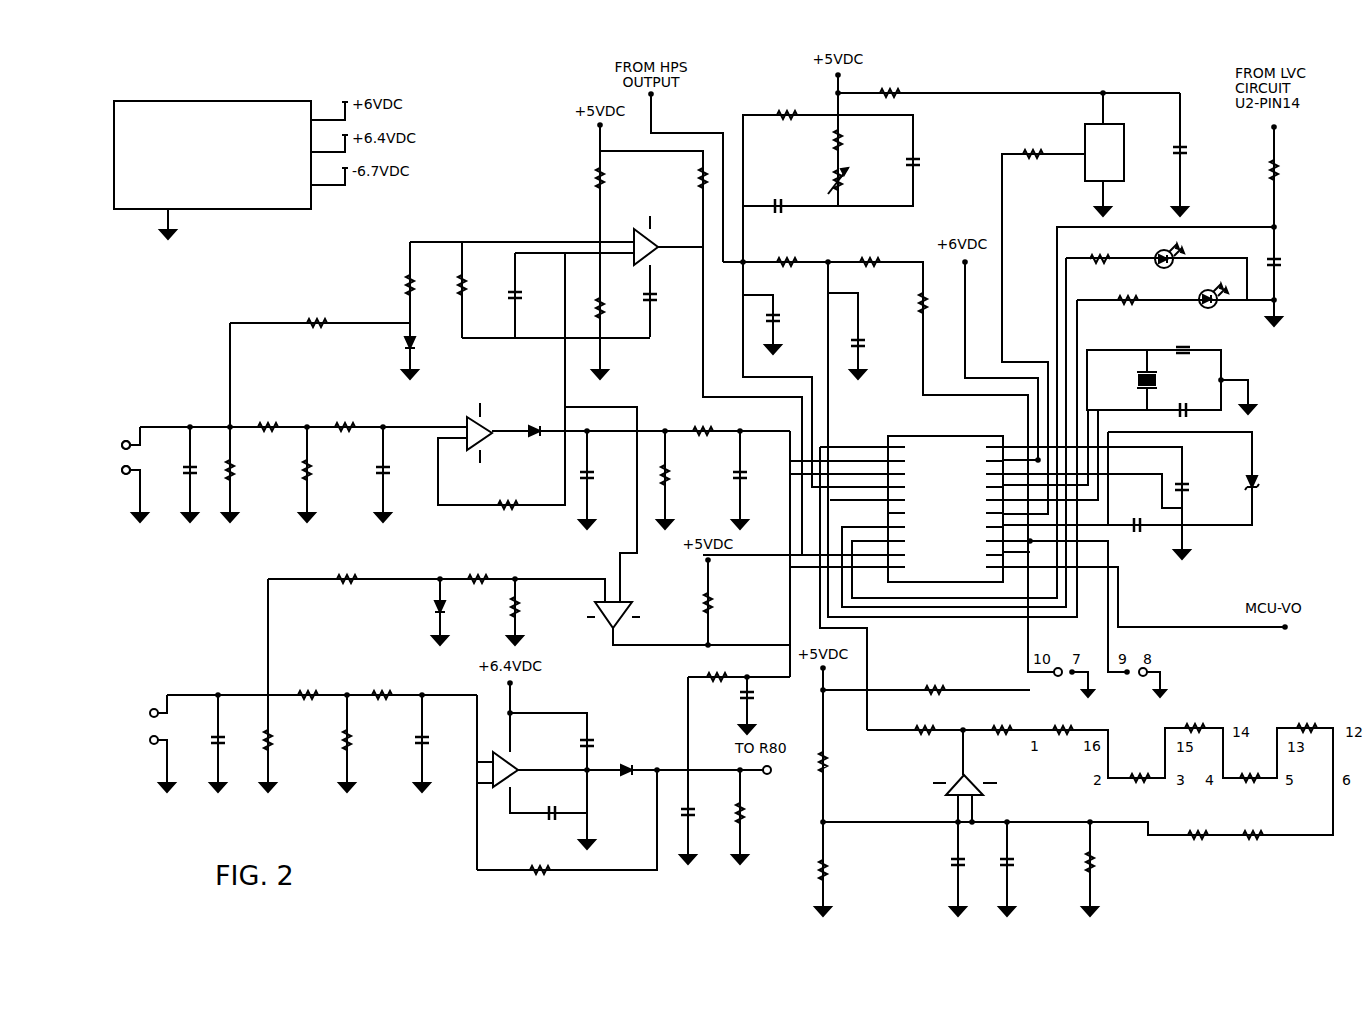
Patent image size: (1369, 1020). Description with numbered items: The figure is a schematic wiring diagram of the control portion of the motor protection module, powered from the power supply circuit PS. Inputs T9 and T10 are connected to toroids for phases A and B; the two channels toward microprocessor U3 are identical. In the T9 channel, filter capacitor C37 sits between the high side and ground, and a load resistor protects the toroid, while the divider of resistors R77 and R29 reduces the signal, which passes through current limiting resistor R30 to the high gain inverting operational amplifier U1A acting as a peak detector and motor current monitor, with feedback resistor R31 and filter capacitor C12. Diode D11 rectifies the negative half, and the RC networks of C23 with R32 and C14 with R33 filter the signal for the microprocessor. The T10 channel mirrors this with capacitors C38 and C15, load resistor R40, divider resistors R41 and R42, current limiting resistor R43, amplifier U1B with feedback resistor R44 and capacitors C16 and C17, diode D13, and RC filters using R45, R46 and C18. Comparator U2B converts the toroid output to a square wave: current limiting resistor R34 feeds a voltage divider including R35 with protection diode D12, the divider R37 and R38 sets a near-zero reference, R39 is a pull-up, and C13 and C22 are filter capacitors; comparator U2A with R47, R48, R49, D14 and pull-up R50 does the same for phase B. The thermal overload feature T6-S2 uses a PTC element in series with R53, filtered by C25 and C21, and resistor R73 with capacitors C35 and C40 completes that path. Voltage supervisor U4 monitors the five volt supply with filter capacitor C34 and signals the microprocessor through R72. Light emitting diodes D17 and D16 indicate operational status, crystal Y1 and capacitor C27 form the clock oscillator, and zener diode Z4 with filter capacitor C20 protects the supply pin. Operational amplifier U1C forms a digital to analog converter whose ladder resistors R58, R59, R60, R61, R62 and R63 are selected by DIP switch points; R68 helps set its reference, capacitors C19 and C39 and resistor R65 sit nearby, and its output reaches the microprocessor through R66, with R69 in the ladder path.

The power supply circuit PS is at (212, 155).
The current limiting resistor R34 is at (317, 315).
The voltage divider resistor R35 is at (393, 285).
The diode D12 is at (393, 343).
The capacitor C22 is at (529, 295).
The reference divider resistor R37 is at (583, 178).
The pull-up resistor R39 is at (686, 178).
The reference divider resistor R38 is at (615, 308).
The filter capacitor C13 is at (664, 297).
The comparator U2B is at (646, 242).
The thermal overload protection feature T6-S2 is at (828, 160).
The resistor R53 is at (854, 140).
The PTC element PTC is at (858, 185).
The filter capacitor C21 is at (928, 162).
The filter capacitor C25 is at (770, 198).
The voltage supervisor U4 is at (1117, 153).
The filter capacitor C34 is at (1200, 151).
The resistor R72 is at (1033, 145).
The resistor R73 is at (787, 253).
The capacitor C35 is at (788, 318).
The capacitor C40 is at (873, 344).
The light emitting diode LED1 D17 is at (1154, 262).
The LED2 D16 is at (1206, 301).
The crystal Y1 is at (1129, 380).
The oscillator capacitor C27 is at (1200, 361).
The filter capacitor C20 is at (1137, 516).
The zener diode Z4 is at (1266, 483).
The microprocessor U3 is at (945, 500).
The phase A input T9 is at (117, 457).
The filter capacitor C37 is at (175, 471).
The voltage divider resistor R29 is at (324, 470).
The filter capacitor C12 is at (398, 464).
The voltage divider resistor R77 is at (268, 418).
The current limiting resistor R30 is at (345, 418).
The operational amplifier U1A is at (473, 429).
The diode D11 is at (535, 422).
The feedback resistor R31 is at (508, 496).
The RC filter capacitor C23 is at (602, 476).
The RC filter resistor R32 is at (682, 475).
The RC filter capacitor C14 is at (756, 480).
The RC filter resistor R33 is at (703, 421).
The current limiting resistor R47 is at (347, 569).
The voltage divider resistor R48 is at (478, 569).
The diode D14 is at (423, 607).
The voltage divider resistor R49 is at (498, 607).
The comparator U2A is at (621, 616).
The pull-up resistor R50 is at (724, 603).
The RC filter resistor R46 is at (717, 667).
The RC filter capacitor C18 is at (762, 695).
The RC filter resistor R45 is at (757, 813).
The diode D13 is at (627, 780).
The feedback resistor R44 is at (540, 861).
The capacitor C16 is at (602, 743).
The capacitor C17 is at (552, 805).
The operational amplifier U1B is at (516, 768).
The phase B input T10 is at (138, 726).
The capacitor C38 is at (203, 741).
The load resistor R40 is at (285, 740).
The voltage divider resistor R42 is at (364, 740).
The filter capacitor C15 is at (437, 741).
The voltage divider resistor R41 is at (308, 686).
The current limiting resistor R43 is at (382, 686).
The reference divider resistor R68 is at (840, 762).
The resistor R66 is at (925, 721).
The resistor R69 is at (1002, 721).
The ladder network resistor R58 is at (1138, 769).
The ladder network resistor R59 is at (1195, 719).
The ladder network resistor R60 is at (1250, 769).
The ladder network resistor R61 is at (1307, 719).
The ladder network resistor R62 is at (1198, 826).
The ladder network resistor R63 is at (1253, 826).
The operational amplifier U1C is at (954, 783).
The capacitor C19 is at (941, 862).
The capacitor C39 is at (1022, 862).
The resistor R65 is at (1107, 862).